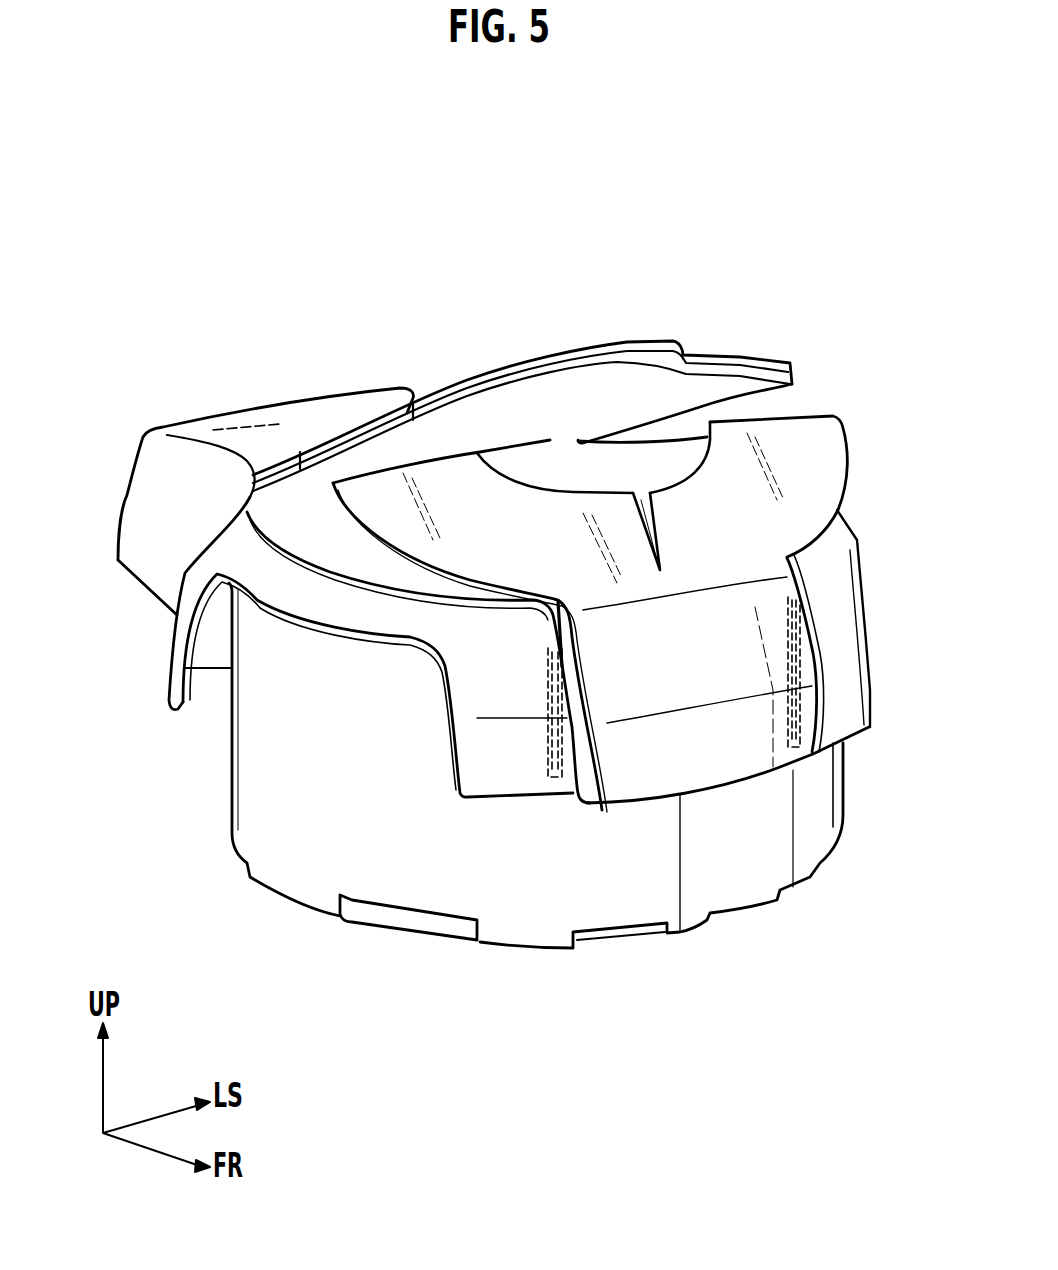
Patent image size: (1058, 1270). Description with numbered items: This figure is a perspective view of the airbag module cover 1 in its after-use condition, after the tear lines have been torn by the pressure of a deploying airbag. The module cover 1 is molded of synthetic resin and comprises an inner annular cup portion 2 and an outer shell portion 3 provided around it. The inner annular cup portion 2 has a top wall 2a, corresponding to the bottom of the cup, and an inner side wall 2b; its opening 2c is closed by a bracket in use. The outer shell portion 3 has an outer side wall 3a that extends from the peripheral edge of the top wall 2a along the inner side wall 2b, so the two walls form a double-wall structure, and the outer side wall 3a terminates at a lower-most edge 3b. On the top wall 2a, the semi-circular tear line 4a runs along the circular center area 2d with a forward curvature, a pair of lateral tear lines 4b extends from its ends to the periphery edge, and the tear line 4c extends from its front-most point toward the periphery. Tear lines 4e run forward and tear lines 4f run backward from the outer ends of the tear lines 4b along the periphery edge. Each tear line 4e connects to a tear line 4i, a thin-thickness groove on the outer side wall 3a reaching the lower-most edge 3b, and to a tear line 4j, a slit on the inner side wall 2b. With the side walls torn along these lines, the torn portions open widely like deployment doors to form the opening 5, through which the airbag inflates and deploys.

The airbag module cover 1 is at (648, 168).
The inner annular cup portion 2 is at (232, 790).
The top wall 2a is at (700, 383).
The inner side wall 2b is at (610, 918).
The opening 2c is at (423, 938).
The circular center area 2d is at (620, 365).
The outer shell portion 3 is at (171, 652).
The outer side wall 3a is at (840, 580).
The lower-most edge 3b is at (663, 800).
The semi-circular tear line 4a is at (489, 376).
The tear lines 4b is at (407, 467).
The tear line 4c is at (655, 517).
The tear lines 4e is at (377, 538).
The tear lines 4f is at (287, 467).
The tear lines 4i is at (580, 775).
The tear lines 4j is at (550, 756).
The opening 5 is at (573, 412).